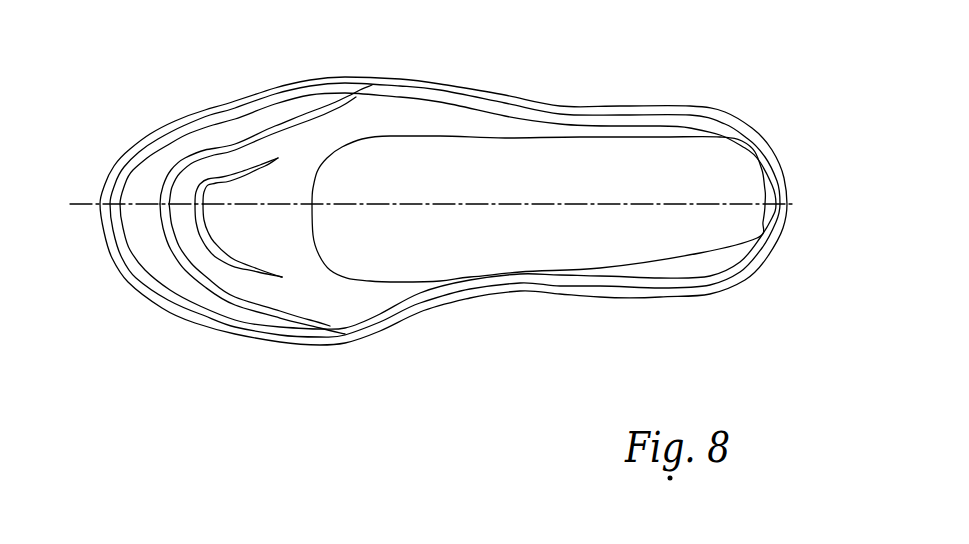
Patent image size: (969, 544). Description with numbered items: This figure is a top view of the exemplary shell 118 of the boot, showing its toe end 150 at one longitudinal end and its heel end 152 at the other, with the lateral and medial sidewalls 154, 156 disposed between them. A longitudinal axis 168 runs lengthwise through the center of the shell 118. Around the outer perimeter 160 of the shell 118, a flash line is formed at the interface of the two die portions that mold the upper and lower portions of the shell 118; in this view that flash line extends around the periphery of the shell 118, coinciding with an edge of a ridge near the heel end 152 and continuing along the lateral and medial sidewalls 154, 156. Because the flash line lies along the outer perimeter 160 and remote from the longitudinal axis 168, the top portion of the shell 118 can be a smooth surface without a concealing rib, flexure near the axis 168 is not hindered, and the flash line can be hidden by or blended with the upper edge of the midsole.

The shell 118 is at (153, 63).
The toe end 150 is at (103, 197).
The heel end 152 is at (788, 190).
The lateral sidewall 154 is at (317, 128).
The medial sidewall 156 is at (347, 308).
The outer perimeter 160 is at (235, 193).
The longitudinal axis 168 is at (100, 204).